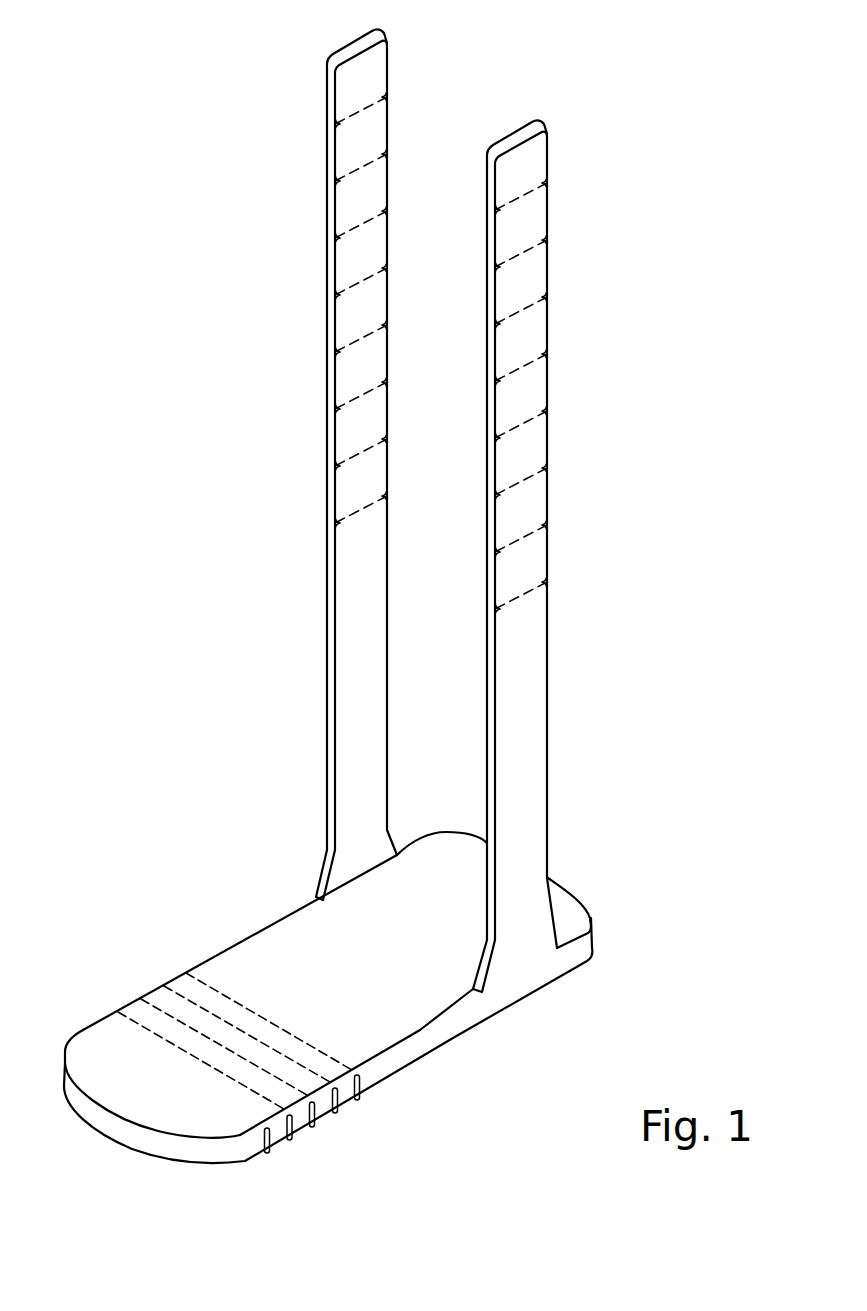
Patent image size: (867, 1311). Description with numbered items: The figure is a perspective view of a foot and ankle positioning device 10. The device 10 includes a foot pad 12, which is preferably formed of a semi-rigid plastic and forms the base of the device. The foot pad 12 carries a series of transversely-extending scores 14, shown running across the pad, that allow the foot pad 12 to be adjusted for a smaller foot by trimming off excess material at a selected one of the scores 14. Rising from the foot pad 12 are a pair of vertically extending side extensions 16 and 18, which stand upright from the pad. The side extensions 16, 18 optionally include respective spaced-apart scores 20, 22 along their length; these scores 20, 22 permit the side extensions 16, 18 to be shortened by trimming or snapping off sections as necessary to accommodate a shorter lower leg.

The foot and ankle positioning device 10 is at (115, 263).
The foot pad 12 is at (268, 937).
The scores 14 is at (267, 1152).
The side extension 16 is at (355, 670).
The side extension 18 is at (532, 722).
The scores 20 is at (327, 122).
The scores 22 is at (547, 585).